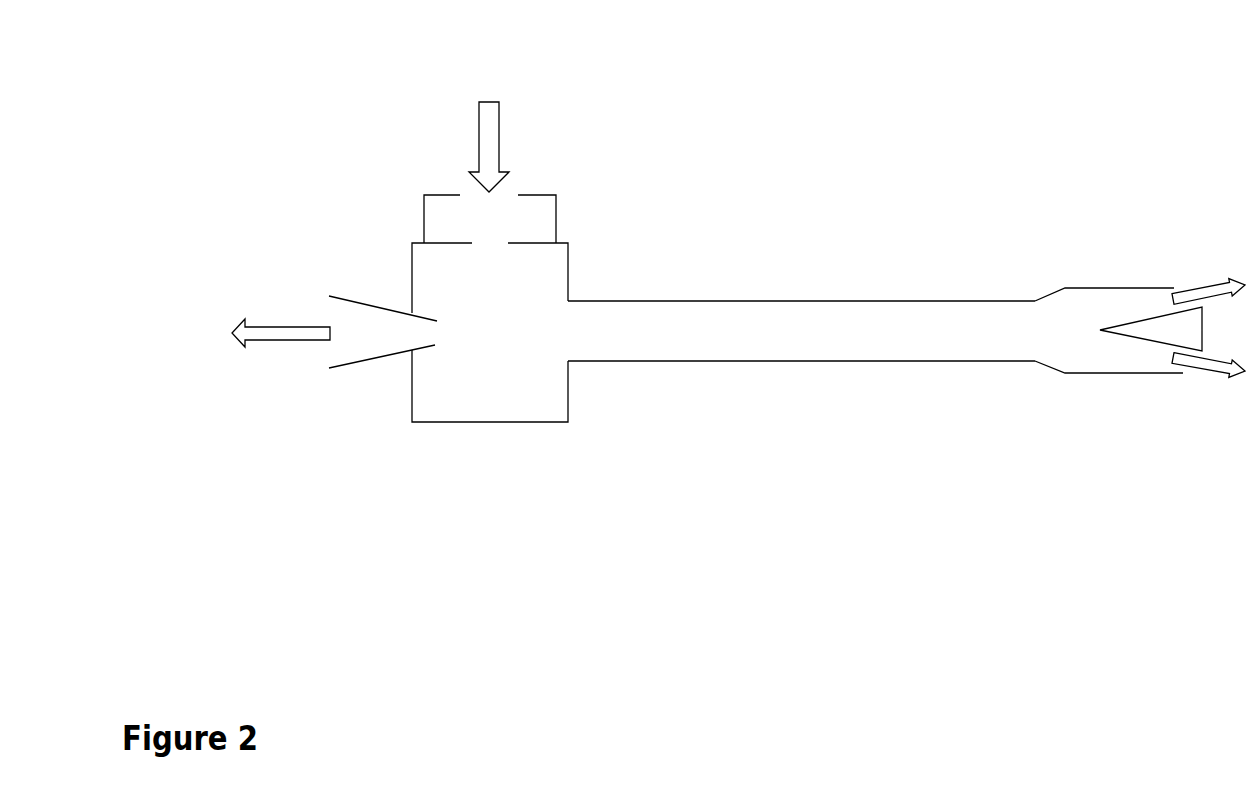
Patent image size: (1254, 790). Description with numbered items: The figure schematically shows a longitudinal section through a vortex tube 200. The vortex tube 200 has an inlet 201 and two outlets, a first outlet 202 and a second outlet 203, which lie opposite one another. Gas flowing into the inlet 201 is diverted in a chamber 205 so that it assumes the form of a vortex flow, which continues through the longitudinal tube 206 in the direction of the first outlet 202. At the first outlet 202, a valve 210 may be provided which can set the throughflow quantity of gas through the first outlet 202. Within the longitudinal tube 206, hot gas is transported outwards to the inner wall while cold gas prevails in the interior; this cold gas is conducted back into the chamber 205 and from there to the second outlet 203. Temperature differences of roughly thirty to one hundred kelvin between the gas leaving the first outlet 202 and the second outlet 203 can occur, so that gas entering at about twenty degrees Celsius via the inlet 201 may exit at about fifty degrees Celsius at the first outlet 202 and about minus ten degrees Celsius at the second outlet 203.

The vortex tube 200 is at (225, 32).
The inlet 201 is at (513, 205).
The first outlet 202 is at (1086, 356).
The second outlet 203 is at (333, 353).
The chamber 205 is at (540, 287).
The longitudinal tube 206 is at (698, 322).
The valve 210 is at (1160, 332).